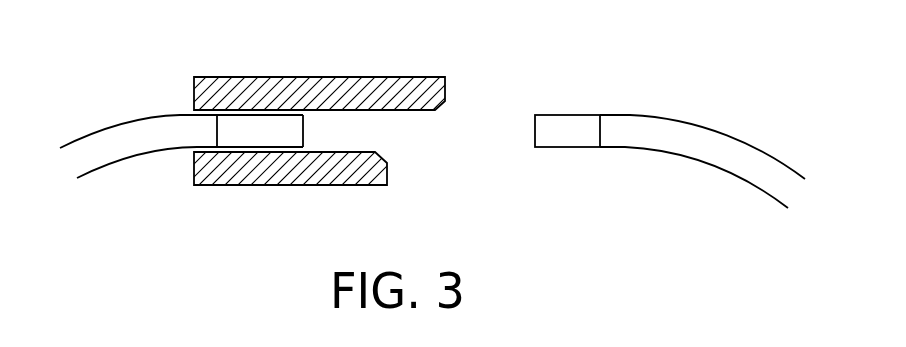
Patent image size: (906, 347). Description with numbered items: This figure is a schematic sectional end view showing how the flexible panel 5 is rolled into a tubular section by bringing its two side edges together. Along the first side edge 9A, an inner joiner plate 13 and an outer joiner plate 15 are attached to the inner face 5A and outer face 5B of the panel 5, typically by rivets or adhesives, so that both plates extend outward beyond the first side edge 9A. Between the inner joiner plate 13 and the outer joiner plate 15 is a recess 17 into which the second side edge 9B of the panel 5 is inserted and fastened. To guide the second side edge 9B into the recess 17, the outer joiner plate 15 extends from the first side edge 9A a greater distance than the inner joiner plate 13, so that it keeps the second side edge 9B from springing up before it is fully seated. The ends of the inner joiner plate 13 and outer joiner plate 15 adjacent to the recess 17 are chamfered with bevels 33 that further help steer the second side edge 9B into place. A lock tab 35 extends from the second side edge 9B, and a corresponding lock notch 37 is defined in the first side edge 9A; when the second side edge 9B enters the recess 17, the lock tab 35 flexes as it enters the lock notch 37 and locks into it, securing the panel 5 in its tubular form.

The flexible panel 5 is at (711, 127).
The inner face 5A is at (143, 150).
The outer face 5B is at (133, 115).
The first side edge 9A is at (304, 132).
The second side edge 9B is at (601, 130).
The inner joiner plate 13 is at (229, 186).
The outer joiner plate 15 is at (348, 77).
The recess 17 is at (352, 132).
The bevel 33 is at (445, 104).
The lock tab 35 is at (565, 115).
The lock notch 37 is at (216, 135).